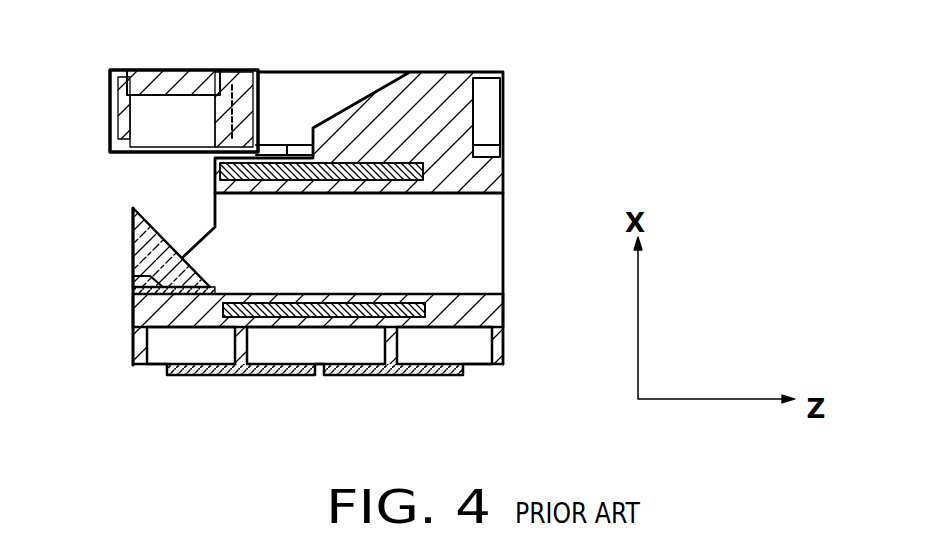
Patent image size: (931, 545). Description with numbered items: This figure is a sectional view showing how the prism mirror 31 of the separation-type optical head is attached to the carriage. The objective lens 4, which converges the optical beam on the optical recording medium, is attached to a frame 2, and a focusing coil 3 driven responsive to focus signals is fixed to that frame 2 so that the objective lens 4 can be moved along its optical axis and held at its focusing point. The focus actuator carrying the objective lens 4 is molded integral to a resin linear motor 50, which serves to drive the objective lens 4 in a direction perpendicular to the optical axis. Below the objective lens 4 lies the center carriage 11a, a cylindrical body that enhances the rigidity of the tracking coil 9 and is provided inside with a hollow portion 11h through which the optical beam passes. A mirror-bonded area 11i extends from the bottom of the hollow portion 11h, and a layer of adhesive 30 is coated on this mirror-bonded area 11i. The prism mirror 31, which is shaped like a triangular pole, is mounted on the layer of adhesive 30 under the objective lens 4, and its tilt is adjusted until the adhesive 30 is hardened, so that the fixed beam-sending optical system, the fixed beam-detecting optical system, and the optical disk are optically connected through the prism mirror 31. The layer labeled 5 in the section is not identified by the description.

The frame 2 is at (258, 98).
The focusing coil 3 is at (110, 112).
The objective lens 4 is at (156, 82).
The yoke 5 is at (328, 72).
The tracking coil 9 is at (400, 296).
The center carriage 11a is at (197, 305).
The hollow portion 11h is at (487, 244).
The mirror-bonded area 11i is at (155, 300).
The adhesive 30 is at (133, 281).
The prism mirror 31 is at (133, 247).
The linear motor 50 is at (507, 93).